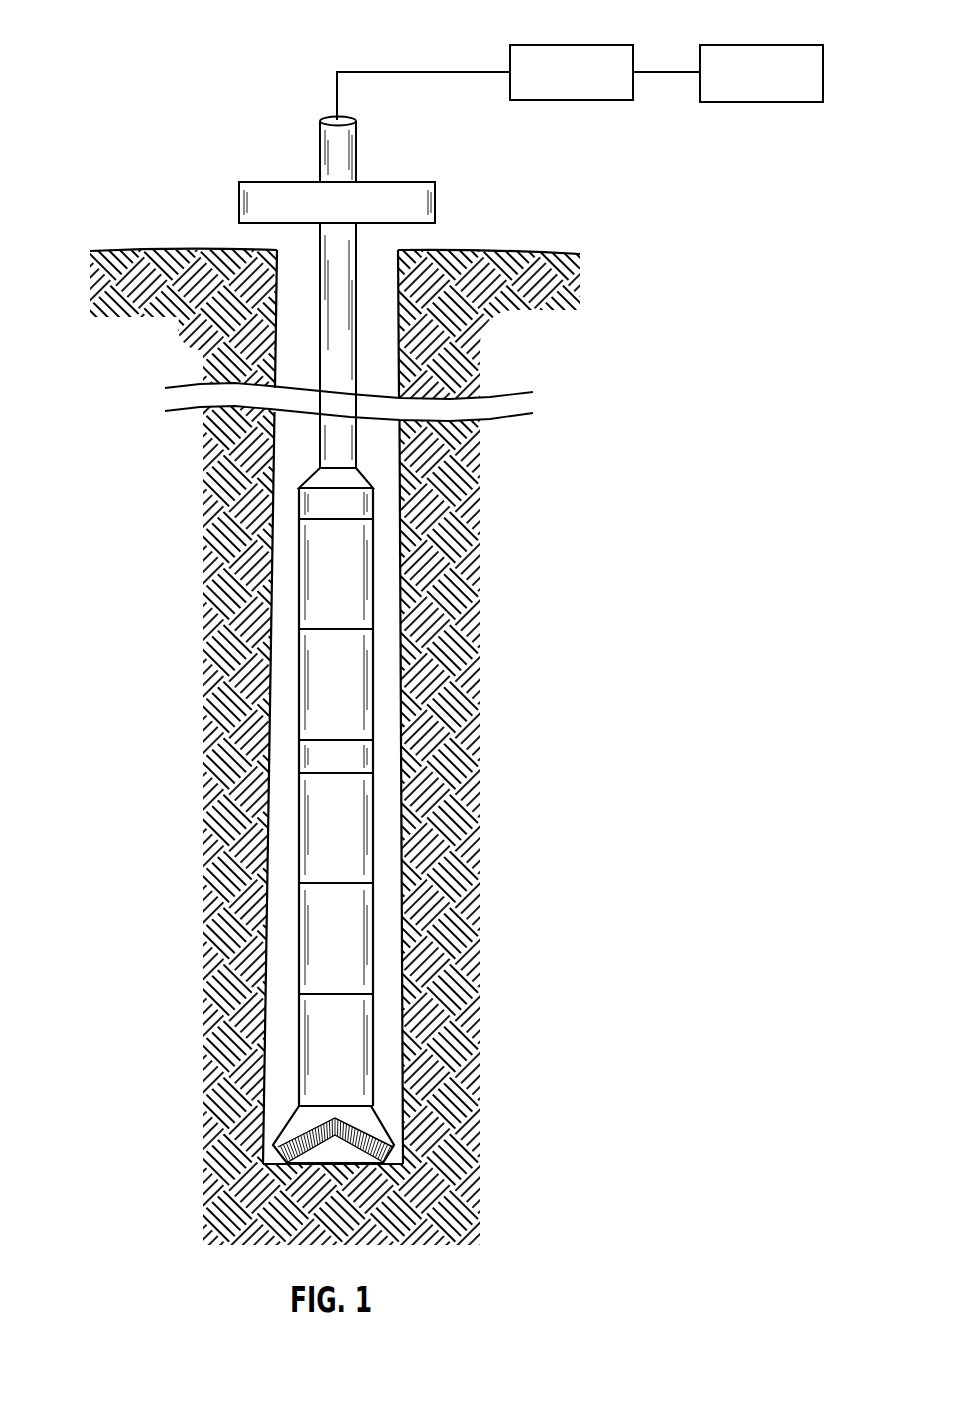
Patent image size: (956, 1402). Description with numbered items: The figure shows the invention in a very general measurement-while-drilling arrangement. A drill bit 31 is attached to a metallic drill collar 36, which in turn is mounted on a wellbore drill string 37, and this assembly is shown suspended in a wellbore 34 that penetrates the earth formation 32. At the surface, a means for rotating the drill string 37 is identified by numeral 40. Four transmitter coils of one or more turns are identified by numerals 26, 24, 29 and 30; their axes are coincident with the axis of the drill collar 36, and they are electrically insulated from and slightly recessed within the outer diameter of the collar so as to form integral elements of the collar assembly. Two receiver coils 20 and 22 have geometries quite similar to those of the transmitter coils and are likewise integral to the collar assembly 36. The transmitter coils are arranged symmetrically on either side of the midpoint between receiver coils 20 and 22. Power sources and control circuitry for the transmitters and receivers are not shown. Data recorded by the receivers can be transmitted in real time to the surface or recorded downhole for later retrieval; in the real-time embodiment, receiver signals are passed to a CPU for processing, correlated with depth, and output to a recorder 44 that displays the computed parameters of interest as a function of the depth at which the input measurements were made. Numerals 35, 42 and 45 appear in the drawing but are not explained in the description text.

The receiver coil 20 is at (375, 773).
The receiver coil 22 is at (375, 740).
The transmitter coil 24 is at (372, 994).
The transmitter coil 26 is at (375, 883).
The transmitter coil 29 is at (375, 628).
The transmitter coil 30 is at (375, 518).
The drill bit 31 is at (380, 1122).
The earth formation 32 is at (215, 362).
The wellbore 34 is at (282, 585).
The formation bed 35 is at (133, 656).
The drill collar 36 is at (342, 827).
The drill string 37 is at (338, 362).
The means for rotating the drill string 40 is at (263, 182).
The CPU 42 is at (547, 45).
The recorder 44 is at (728, 45).
The data link cable 45 is at (392, 70).